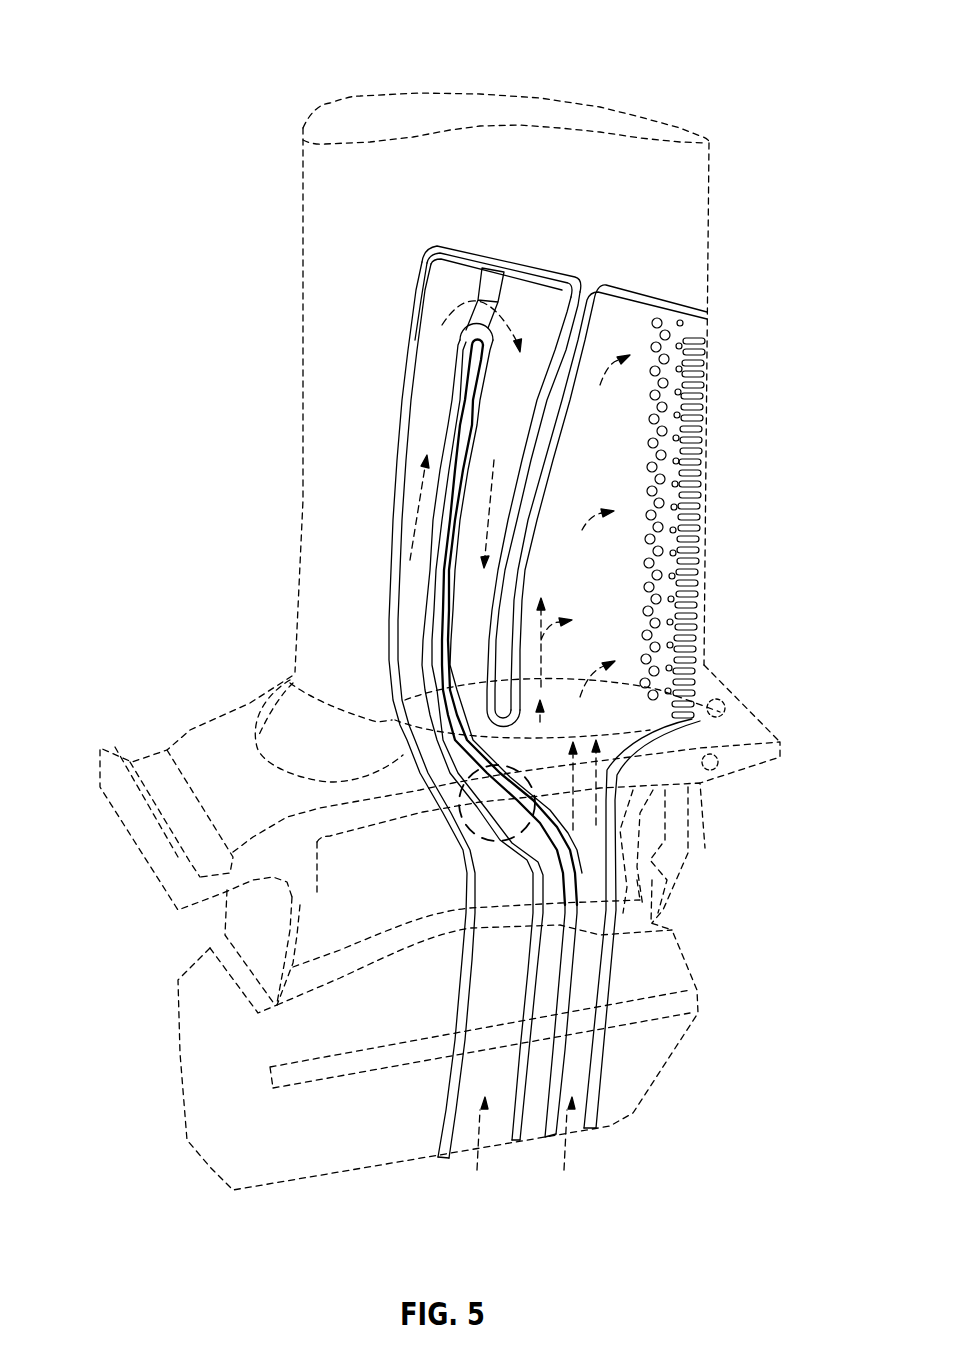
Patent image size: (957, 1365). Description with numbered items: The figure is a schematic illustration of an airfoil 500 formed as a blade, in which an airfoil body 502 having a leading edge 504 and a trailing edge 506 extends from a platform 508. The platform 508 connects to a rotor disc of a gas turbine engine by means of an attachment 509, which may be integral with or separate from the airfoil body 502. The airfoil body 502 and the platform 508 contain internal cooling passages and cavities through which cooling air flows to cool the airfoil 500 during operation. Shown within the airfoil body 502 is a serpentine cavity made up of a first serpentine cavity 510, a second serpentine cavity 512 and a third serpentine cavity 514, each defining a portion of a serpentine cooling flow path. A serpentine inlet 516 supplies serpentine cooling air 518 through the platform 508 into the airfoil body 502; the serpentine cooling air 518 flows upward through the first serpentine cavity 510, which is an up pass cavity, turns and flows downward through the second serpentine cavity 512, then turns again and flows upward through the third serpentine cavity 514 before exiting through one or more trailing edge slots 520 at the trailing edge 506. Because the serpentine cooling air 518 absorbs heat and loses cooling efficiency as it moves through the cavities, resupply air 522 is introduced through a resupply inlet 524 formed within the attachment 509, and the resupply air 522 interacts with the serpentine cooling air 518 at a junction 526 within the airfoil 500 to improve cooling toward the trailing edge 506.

The airfoil 500 is at (343, 38).
The airfoil body 502 is at (327, 263).
The leading edge 504 is at (299, 540).
The trailing edge 506 is at (711, 228).
The platform 508 is at (113, 800).
The attachment 509 is at (203, 1050).
The first serpentine cavity 510 is at (459, 363).
The second serpentine cavity 512 is at (530, 408).
The third serpentine cavity 514 is at (618, 438).
The serpentine inlet 516 is at (493, 1197).
The serpentine cooling air 518 is at (480, 1135).
The trailing edge slots 520 is at (697, 628).
The resupply air 522 is at (566, 1160).
The resupply inlet 524 is at (572, 1195).
The junction 526 is at (452, 818).